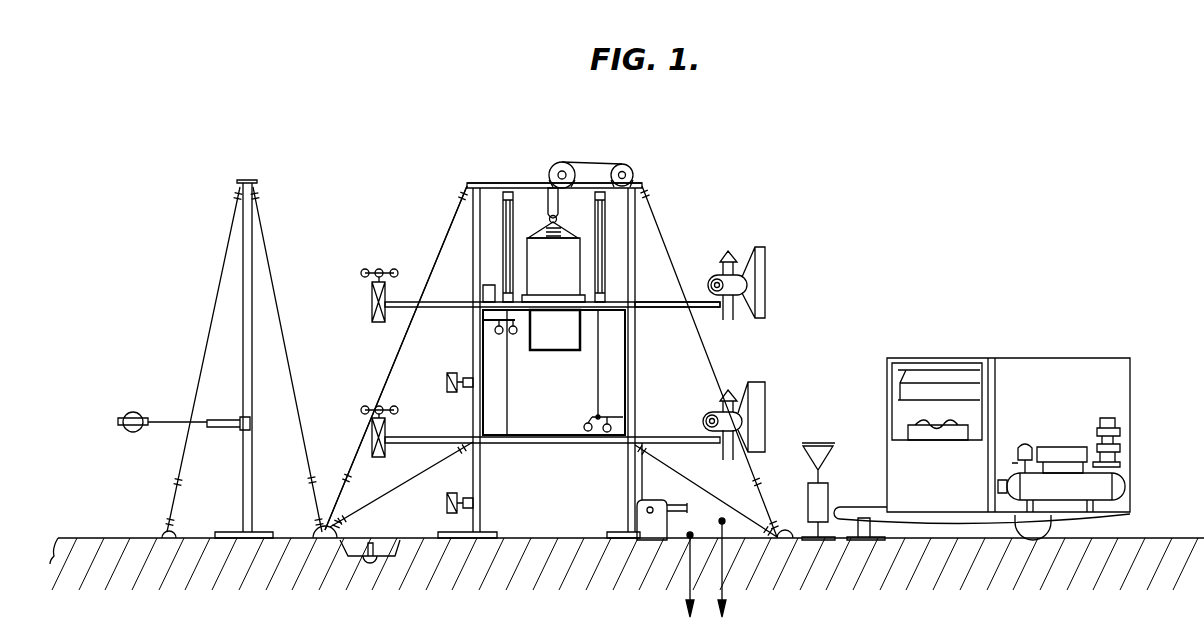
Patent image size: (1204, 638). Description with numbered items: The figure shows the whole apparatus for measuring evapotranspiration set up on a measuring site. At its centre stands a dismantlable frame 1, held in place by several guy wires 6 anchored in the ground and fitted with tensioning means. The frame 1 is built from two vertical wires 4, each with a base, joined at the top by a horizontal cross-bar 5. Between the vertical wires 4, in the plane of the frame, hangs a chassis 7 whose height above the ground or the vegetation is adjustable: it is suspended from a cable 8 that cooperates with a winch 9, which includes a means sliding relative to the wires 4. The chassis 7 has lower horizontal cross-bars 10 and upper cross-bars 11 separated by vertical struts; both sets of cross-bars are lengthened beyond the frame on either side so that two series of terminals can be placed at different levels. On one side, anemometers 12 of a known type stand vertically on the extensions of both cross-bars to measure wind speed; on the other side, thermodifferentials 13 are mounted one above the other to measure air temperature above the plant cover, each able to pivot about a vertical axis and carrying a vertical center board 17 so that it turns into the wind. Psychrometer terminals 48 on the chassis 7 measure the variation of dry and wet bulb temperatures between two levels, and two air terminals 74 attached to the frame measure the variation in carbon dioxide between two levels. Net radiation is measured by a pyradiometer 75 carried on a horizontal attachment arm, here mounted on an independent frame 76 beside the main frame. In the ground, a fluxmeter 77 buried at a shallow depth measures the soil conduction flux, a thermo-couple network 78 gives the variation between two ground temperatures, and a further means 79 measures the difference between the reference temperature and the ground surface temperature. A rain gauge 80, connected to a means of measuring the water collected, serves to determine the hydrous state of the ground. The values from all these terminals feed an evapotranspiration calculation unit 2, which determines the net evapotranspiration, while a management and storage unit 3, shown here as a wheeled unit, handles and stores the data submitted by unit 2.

The frame 1 is at (470, 172).
The evapotranspiration calculation unit 2 is at (561, 271).
The management and storage unit 3 is at (1037, 358).
The vertical wires 4 is at (431, 278).
The horizontal cross-bar 5 is at (500, 183).
The guy wires 6 is at (390, 368).
The chassis 7 is at (613, 302).
The cable 8 is at (543, 177).
The winch 9 is at (653, 498).
The lower horizontal cross-bars 10 is at (537, 444).
The upper cross-bars 11 is at (690, 308).
The anemometers 12 is at (372, 300).
The thermodifferentials 13 is at (761, 292).
The vertical center board 17 is at (503, 235).
The psychrometer terminals 48 is at (584, 427).
The air terminals 74 is at (447, 380).
The pyradiometer 75 is at (133, 412).
The independent frame 76 is at (245, 263).
The fluxmeter 77 is at (380, 562).
The thermo-couple network 78 is at (722, 567).
The means for measuring temperature variation 79 is at (687, 570).
The rain gauge 80 is at (820, 440).